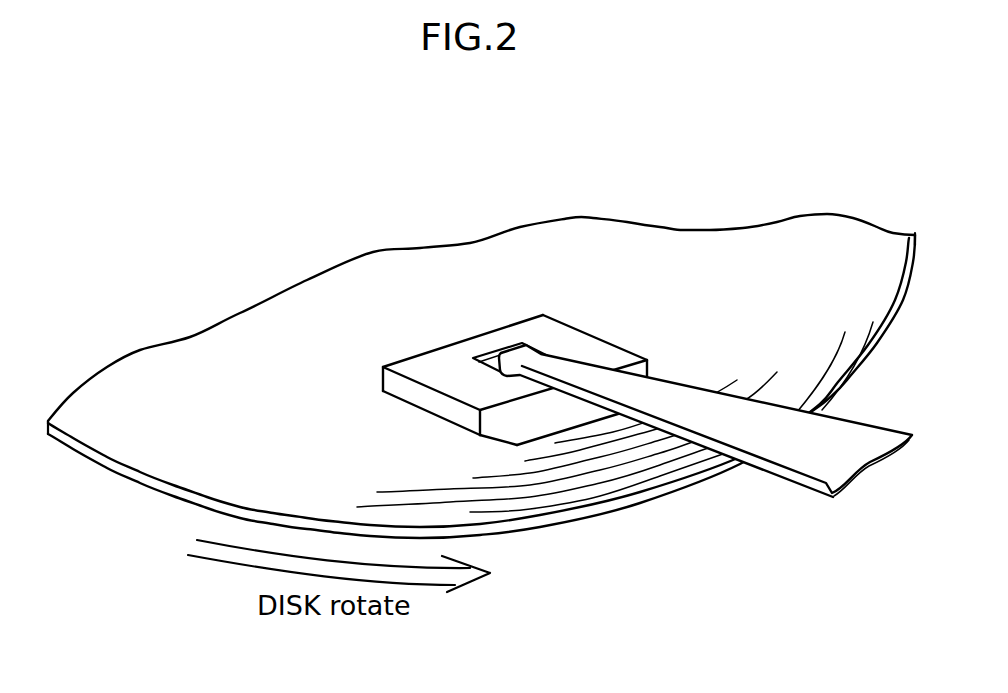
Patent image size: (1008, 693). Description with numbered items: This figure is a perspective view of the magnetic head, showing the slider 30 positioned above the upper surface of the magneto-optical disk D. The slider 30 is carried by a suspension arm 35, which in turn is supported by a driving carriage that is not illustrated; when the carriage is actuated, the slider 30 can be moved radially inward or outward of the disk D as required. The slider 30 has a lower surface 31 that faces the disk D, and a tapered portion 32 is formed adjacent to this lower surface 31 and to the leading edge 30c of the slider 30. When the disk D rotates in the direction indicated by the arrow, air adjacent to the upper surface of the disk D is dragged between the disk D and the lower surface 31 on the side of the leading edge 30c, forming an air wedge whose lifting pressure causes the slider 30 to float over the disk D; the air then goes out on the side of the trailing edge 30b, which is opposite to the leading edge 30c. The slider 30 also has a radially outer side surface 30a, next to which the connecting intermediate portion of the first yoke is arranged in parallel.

The slider 30 is at (546, 326).
The radially outer side surface 30a is at (567, 428).
The trailing edge 30b is at (617, 347).
The leading edge 30c is at (415, 392).
The lower surface 31 is at (535, 432).
The tapered portion 32 is at (490, 442).
The suspension arm 35 is at (867, 430).
The magneto-optical disk D is at (603, 473).